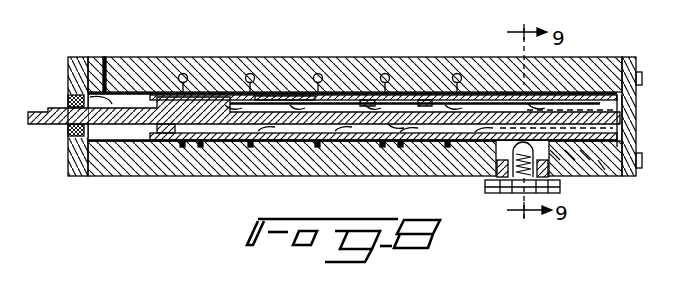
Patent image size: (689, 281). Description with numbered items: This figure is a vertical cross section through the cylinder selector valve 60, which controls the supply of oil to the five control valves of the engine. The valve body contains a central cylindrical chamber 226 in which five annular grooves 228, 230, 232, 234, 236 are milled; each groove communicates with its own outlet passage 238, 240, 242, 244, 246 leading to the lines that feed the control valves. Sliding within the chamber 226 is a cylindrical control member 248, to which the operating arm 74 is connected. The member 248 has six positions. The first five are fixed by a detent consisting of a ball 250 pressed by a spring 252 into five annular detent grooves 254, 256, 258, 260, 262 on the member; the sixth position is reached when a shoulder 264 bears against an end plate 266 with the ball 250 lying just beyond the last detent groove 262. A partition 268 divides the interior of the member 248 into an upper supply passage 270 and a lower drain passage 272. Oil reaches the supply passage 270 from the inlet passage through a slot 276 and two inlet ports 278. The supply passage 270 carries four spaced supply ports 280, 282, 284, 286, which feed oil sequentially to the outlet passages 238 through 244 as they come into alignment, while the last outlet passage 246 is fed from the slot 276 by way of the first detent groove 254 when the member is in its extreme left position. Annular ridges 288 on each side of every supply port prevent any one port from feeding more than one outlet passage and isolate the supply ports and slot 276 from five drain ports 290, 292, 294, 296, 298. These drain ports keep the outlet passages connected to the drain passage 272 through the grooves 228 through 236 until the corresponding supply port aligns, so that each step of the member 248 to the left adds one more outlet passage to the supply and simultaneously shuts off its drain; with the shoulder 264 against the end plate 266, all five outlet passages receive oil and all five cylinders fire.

The cylinder selector valve 60 is at (317, 58).
The operating arm 74 is at (70, 92).
The central cylindrical chamber 226 is at (369, 97).
The annular groove 228 is at (182, 147).
The annular groove 230 is at (250, 146).
The annular groove 232 is at (317, 146).
The annular groove 234 is at (382, 146).
The annular groove 236 is at (448, 146).
The outlet passage 238 is at (183, 73).
The outlet passage 240 is at (265, 60).
The outlet passage 242 is at (323, 70).
The outlet passage 244 is at (390, 70).
The outlet passage 246 is at (458, 73).
The cylindrical control member 248 is at (200, 147).
The ball 250 is at (513, 165).
The spring 252 is at (520, 173).
The annular detent groove 254 is at (505, 151).
The annular detent groove 256 is at (556, 160).
The annular detent groove 258 is at (570, 162).
The annular detent groove 260 is at (585, 168).
The annular detent groove 262 is at (605, 177).
The shoulder 264 is at (148, 96).
The end plate 266 is at (68, 145).
The partition 268 is at (395, 146).
The supply passage 270 is at (423, 101).
The drain passage 272 is at (400, 146).
The slot 276 is at (625, 125).
The inlet port 278 is at (538, 110).
The supply port 280 is at (240, 109).
The supply port 282 is at (304, 109).
The supply port 284 is at (380, 109).
The supply port 286 is at (461, 110).
The annular ridge 288 is at (217, 94).
The drain port 290 is at (157, 130).
The drain port 292 is at (274, 128).
The drain port 294 is at (351, 128).
The drain port 296 is at (416, 129).
The drain port 298 is at (491, 129).